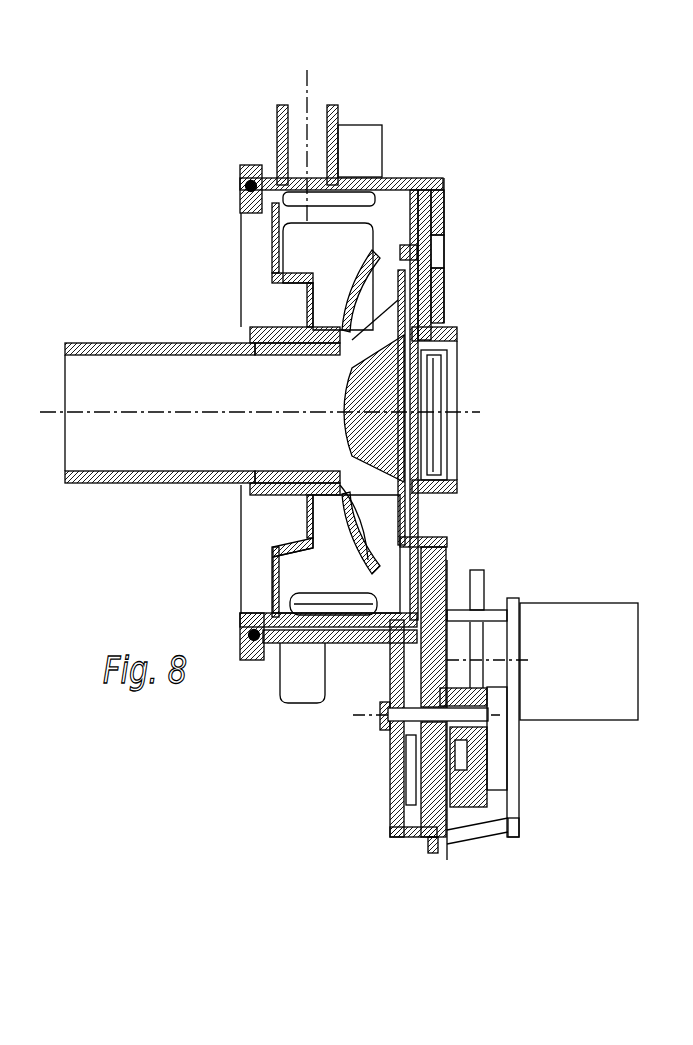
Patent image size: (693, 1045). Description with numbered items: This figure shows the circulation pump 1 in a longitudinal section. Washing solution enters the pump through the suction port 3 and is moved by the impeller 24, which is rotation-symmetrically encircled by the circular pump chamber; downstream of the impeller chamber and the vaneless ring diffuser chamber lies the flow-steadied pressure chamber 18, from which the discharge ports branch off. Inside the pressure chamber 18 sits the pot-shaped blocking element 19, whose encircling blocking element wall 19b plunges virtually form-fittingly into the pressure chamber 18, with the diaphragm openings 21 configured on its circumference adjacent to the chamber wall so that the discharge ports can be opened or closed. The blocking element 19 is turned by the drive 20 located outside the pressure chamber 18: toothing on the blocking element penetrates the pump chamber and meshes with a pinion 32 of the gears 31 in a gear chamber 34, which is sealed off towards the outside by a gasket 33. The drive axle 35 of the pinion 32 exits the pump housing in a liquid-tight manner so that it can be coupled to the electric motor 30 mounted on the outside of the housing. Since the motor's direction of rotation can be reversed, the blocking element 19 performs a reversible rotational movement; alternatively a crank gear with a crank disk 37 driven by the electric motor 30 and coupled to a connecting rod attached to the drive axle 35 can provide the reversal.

The circulation pump 1 is at (240, 235).
The suction port 3 is at (87, 343).
The pressure chamber 18 is at (273, 178).
The blocking element 19 is at (378, 643).
The blocking element wall 19b is at (407, 218).
The drive 20 is at (524, 566).
The diaphragm openings 21 is at (347, 200).
The impeller 24 is at (388, 306).
The electric motor 30 is at (592, 623).
The gears 31 is at (530, 738).
The pinion 32 is at (390, 788).
The gasket 33 is at (437, 690).
The gear chamber 34 is at (447, 852).
The drive axle 35 is at (403, 722).
The crank disk 37 is at (487, 758).